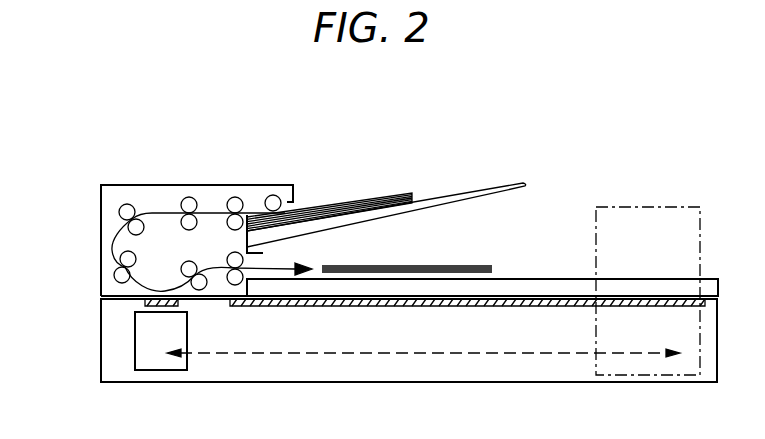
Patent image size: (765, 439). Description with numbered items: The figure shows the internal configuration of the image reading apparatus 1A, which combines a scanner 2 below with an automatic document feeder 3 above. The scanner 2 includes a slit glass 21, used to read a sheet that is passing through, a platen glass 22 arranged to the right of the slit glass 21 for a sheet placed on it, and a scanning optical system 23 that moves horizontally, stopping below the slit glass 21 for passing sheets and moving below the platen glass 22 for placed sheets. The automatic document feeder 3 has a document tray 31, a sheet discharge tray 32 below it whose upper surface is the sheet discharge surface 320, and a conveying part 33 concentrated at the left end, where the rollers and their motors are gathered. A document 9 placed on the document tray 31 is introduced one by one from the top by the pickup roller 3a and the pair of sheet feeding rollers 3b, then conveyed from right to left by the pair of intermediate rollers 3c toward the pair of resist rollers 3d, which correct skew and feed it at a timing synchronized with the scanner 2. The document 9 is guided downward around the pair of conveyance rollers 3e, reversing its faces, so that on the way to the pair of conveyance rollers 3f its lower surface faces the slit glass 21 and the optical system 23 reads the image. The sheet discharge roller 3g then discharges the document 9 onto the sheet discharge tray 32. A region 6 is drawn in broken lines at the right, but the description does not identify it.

The image reading apparatus 1A is at (488, 78).
The scanner 2 is at (100, 352).
The slit glass 21 is at (145, 300).
The platen glass 22 is at (405, 306).
The scanning optical system 23 is at (163, 370).
The automatic document feeder 3 is at (162, 207).
The conveying part 33 is at (148, 184).
The pickup roller 3a is at (273, 195).
The pair of sheet feeding rollers 3b is at (234, 196).
The pair of intermediate rollers 3c is at (189, 196).
The pair of resist rollers 3d is at (119, 210).
The pair of conveyance rollers 3e is at (113, 272).
The pair of conveyance rollers 3f is at (184, 261).
The sheet discharge roller 3g is at (230, 257).
The document tray 31 is at (470, 193).
The sheet discharge tray 32 is at (513, 298).
The sheet discharge surface 320 is at (533, 278).
The document 9 is at (360, 200).
The control unit 6 is at (652, 207).